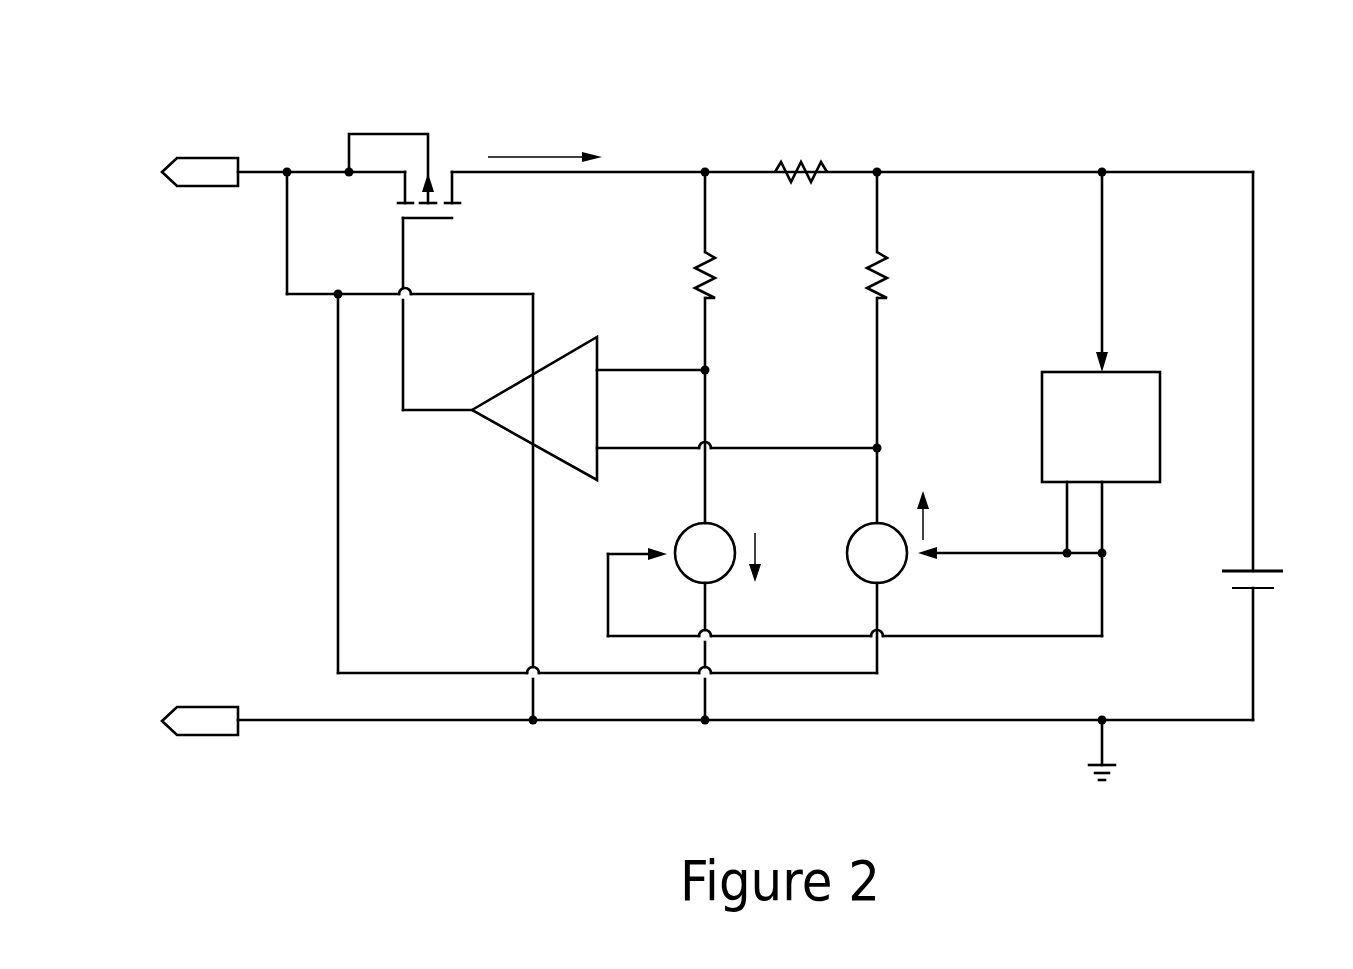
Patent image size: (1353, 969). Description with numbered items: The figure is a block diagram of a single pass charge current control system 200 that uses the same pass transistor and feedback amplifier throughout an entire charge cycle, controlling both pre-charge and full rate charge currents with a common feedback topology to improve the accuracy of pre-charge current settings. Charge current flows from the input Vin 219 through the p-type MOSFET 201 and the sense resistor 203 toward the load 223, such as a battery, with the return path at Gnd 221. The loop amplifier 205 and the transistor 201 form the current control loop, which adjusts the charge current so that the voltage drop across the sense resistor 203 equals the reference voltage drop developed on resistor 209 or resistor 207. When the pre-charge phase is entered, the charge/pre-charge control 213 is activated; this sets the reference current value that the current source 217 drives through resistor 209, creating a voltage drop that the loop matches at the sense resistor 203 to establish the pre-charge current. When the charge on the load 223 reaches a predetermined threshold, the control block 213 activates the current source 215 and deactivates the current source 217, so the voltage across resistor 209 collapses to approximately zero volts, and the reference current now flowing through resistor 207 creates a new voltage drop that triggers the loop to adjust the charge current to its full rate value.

The single pass charge current control system 200 is at (698, 48).
The p-type MOSFET 201 is at (378, 134).
The sense resistor 203 is at (795, 165).
The loop amplifier 205 is at (510, 432).
The resistor 207 is at (692, 270).
The resistor 209 is at (903, 270).
The charge/pre-charge control 213 is at (1123, 485).
The current source 215 is at (683, 530).
The current source 217 is at (898, 578).
The Vin 219 is at (218, 158).
The Gnd 221 is at (215, 737).
The load 223 is at (1265, 571).